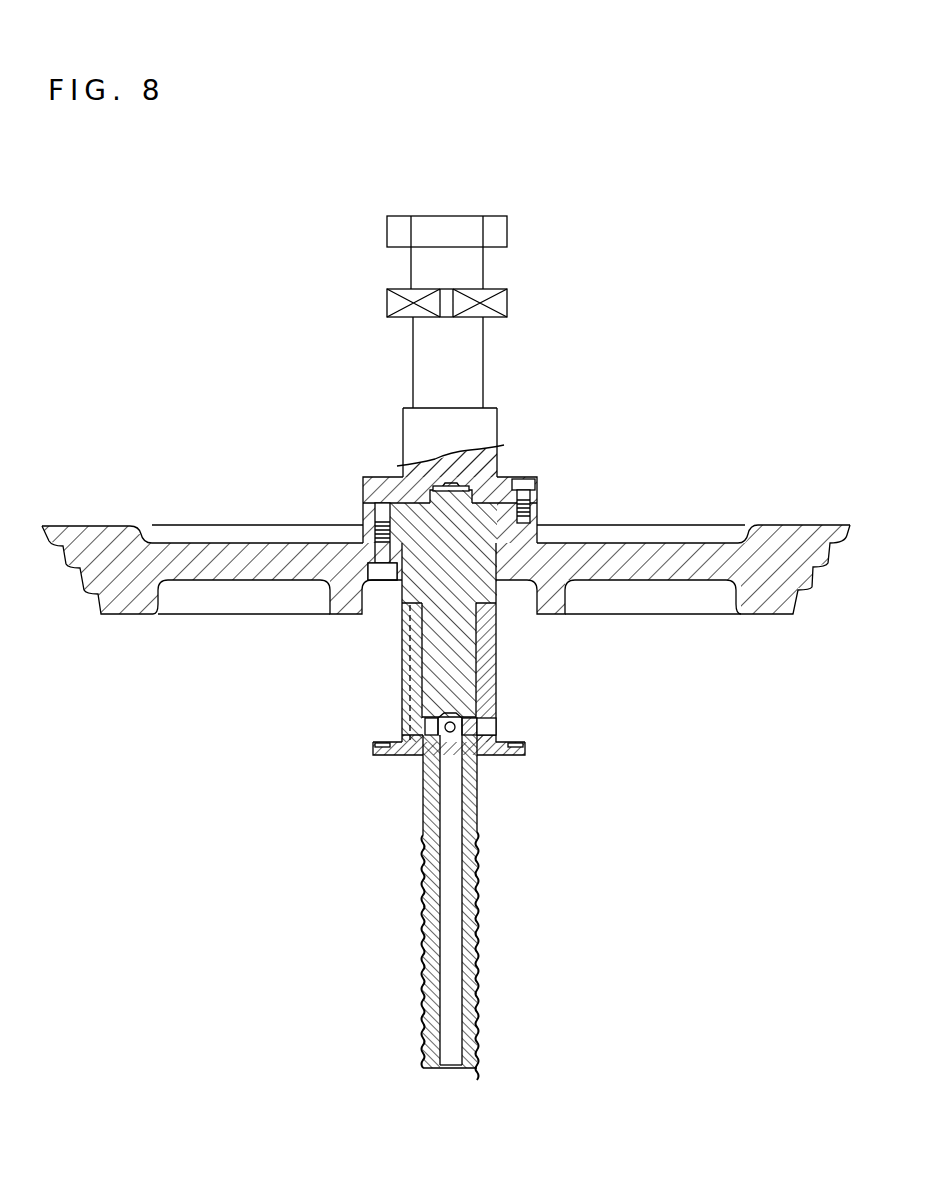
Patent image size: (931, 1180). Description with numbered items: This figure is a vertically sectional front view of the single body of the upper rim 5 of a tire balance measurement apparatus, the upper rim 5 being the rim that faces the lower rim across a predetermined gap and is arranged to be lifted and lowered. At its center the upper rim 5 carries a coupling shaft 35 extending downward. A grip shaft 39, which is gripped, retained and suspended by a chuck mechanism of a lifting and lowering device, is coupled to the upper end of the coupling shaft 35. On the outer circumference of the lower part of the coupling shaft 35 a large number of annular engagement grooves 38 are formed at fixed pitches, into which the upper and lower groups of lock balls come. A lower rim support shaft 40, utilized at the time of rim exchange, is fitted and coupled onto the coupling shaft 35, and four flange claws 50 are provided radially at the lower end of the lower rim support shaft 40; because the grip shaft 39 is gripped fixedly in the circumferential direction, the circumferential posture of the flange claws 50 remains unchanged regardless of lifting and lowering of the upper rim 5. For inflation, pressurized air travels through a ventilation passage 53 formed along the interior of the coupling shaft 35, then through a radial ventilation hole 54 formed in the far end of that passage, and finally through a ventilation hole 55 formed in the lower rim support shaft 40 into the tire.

The upper rim 5 is at (113, 525).
The coupling shaft 35 is at (480, 798).
The annular engagement grooves 38 is at (479, 960).
The grip shaft 39 is at (483, 366).
The lower rim support shaft 40 is at (403, 652).
The flange claws 50 is at (383, 756).
The ventilation passage 53 is at (452, 1040).
The radial ventilation hole 54 is at (468, 720).
The ventilation hole 55 is at (487, 730).